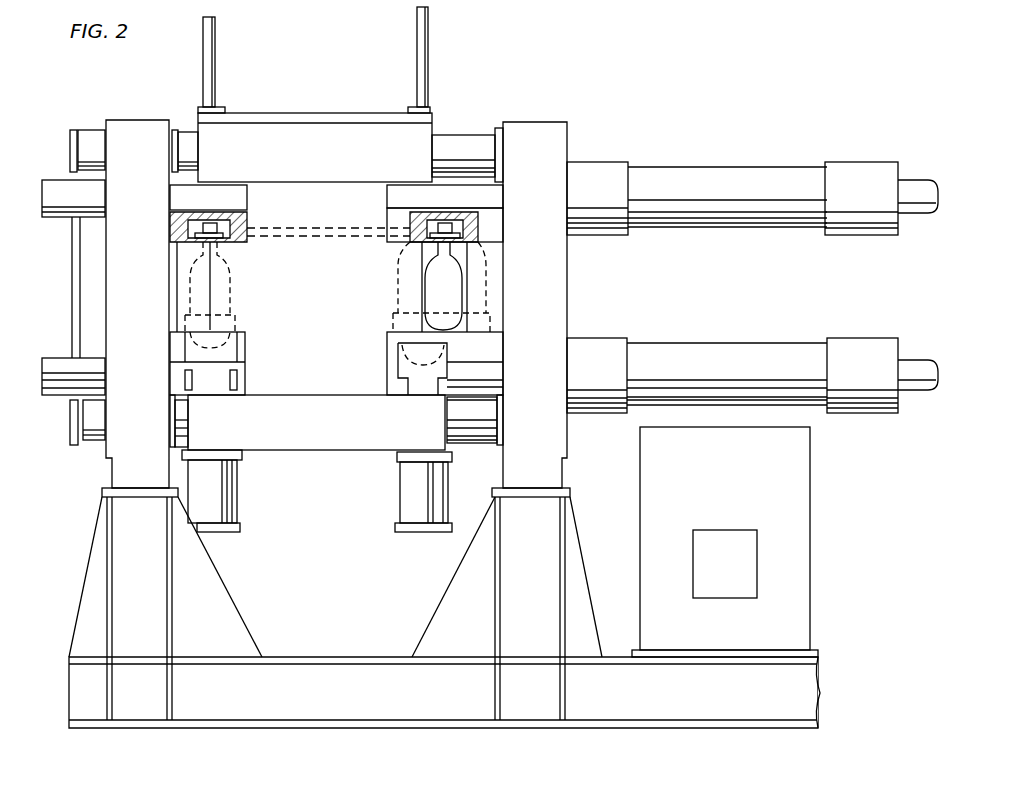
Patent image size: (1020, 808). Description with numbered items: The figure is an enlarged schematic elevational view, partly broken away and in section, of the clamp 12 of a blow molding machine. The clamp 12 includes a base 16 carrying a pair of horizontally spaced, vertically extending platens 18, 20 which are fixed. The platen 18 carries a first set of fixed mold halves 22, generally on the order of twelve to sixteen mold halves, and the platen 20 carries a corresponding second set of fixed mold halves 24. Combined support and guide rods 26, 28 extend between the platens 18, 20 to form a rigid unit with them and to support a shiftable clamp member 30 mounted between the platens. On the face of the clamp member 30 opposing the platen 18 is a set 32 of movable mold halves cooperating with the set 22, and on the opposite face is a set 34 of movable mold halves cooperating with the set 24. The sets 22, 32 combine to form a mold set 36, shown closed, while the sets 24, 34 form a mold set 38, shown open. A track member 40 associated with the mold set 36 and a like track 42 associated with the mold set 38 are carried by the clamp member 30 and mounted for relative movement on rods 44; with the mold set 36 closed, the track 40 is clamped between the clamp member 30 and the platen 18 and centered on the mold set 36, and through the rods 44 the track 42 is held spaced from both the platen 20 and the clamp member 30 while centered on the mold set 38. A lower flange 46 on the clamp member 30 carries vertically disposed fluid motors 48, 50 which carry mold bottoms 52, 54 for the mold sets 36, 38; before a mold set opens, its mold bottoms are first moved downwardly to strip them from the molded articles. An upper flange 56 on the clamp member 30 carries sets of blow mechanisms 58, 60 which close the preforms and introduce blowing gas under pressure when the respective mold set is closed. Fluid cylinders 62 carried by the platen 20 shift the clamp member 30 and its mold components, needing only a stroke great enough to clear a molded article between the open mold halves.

The clamp 12 is at (528, 94).
The base 16 is at (386, 707).
The platen 18 is at (134, 130).
The platen 20 is at (566, 124).
The first set of fixed mold halves 22 is at (183, 252).
The second set of fixed mold halves 24 is at (545, 255).
The combined support and guide rod 26 is at (460, 140).
The combined support and guide rod 28 is at (100, 447).
The shiftable clamp member 30 is at (310, 397).
The set of movable mold halves 32 is at (233, 254).
The set of movable mold halves 34 is at (404, 249).
The mold set 36 is at (240, 293).
The mold set 38 is at (385, 296).
The track member 40 is at (246, 226).
The track 42 is at (410, 223).
The rods 44 is at (397, 238).
The lower flange 46 is at (356, 441).
The fluid motor 48 is at (222, 532).
The fluid motor 50 is at (436, 532).
The mold bottoms 52 is at (230, 352).
The mold bottoms 54 is at (403, 368).
The upper flange 56 is at (337, 125).
The blow mechanisms 58 is at (215, 90).
The blow mechanisms 60 is at (418, 34).
The fluid cylinders 62 is at (735, 178).